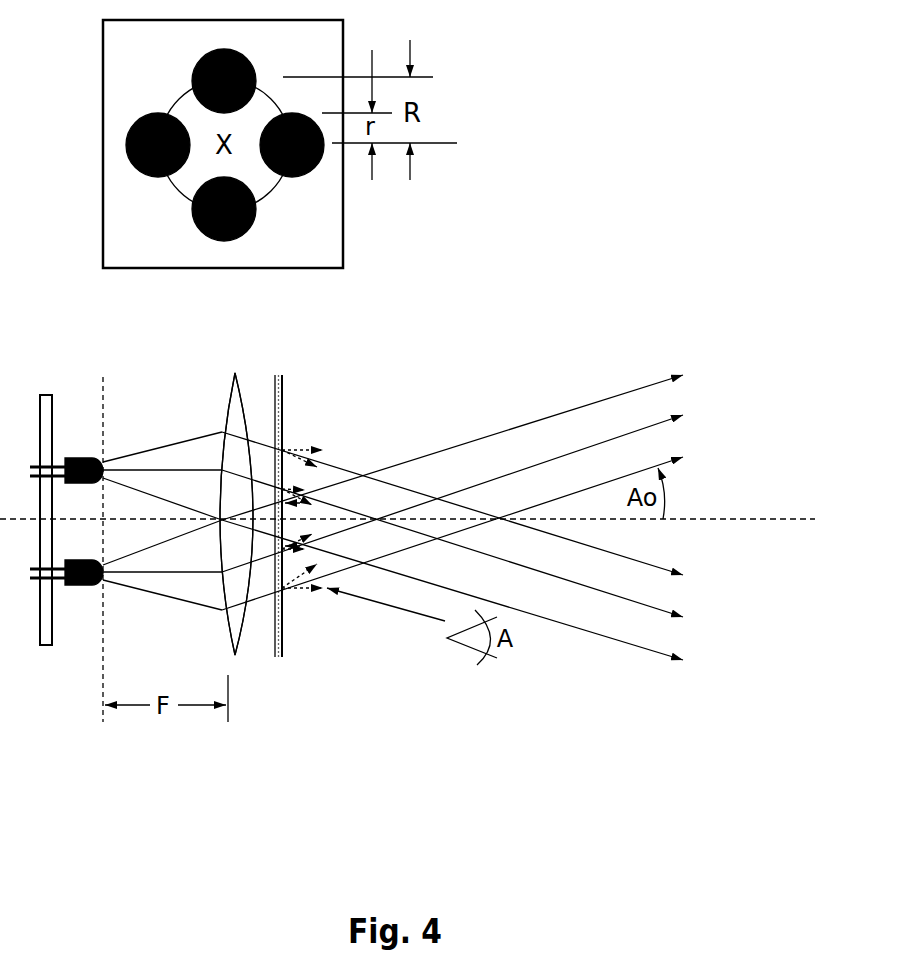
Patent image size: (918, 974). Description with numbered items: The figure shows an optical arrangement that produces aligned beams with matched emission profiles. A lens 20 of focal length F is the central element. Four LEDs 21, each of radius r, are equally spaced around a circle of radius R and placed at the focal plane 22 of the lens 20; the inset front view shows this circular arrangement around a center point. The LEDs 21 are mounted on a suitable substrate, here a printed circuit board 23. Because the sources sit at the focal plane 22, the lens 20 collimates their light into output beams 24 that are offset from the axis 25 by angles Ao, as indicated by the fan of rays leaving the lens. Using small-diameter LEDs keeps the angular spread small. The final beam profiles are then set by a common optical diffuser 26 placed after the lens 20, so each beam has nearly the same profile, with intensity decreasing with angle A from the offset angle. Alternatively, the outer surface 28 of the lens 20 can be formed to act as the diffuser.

The lens 20 is at (231, 659).
The LEDs 21 is at (84, 451).
The focal plane 22 is at (102, 563).
The printed circuit board 23 is at (52, 388).
The output beams 24 is at (653, 462).
The axis 25 is at (424, 519).
The optical diffuser 26 is at (294, 643).
The outer surface 28 is at (280, 489).